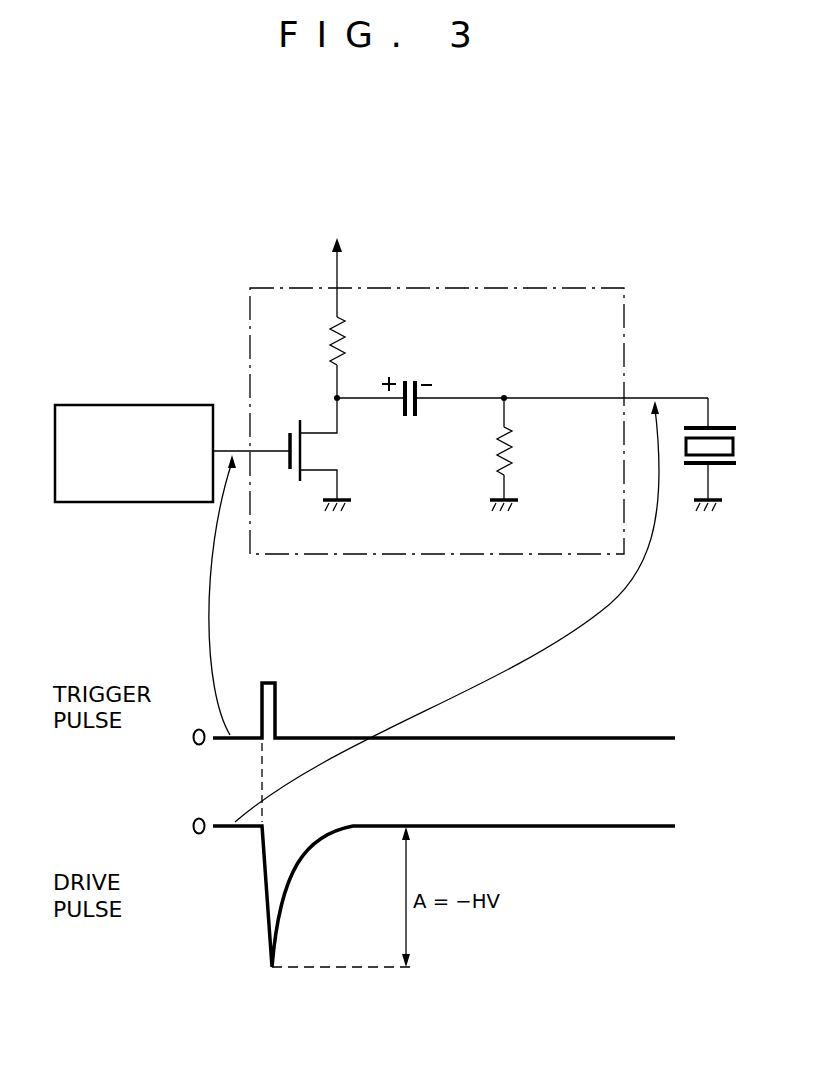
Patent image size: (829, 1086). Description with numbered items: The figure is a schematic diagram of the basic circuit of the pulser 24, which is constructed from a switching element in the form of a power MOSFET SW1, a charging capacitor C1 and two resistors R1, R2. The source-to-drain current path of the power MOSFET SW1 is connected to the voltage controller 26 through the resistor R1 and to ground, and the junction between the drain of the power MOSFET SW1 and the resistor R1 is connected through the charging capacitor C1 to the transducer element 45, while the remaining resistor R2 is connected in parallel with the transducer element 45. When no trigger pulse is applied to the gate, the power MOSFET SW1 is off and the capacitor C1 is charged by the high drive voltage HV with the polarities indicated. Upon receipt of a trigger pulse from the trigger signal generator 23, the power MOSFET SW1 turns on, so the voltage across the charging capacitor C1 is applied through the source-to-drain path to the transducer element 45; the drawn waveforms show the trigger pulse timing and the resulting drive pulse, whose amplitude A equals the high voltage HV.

The trigger signal generator 23 is at (104, 418).
The pulser 24 is at (605, 268).
The voltage controller 26 is at (598, 177).
The transducer element 45 is at (722, 425).
The resistor R1 is at (346, 331).
The resistor R2 is at (512, 458).
The charging capacitor C1 is at (410, 380).
The power MOSFET SW1 is at (294, 420).